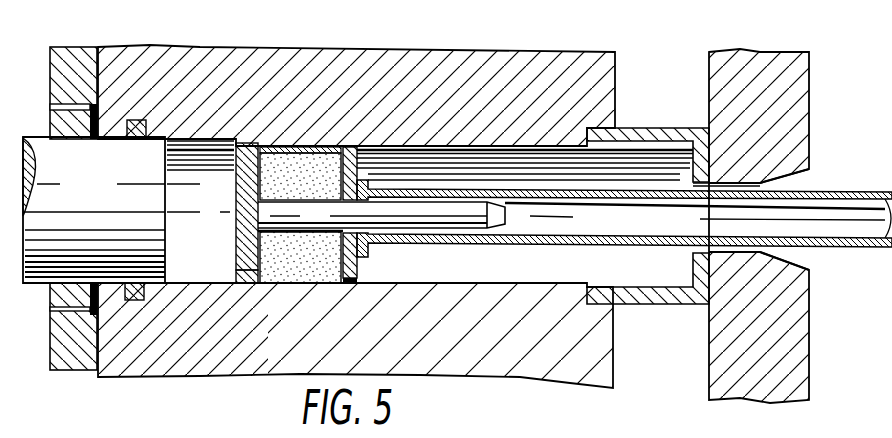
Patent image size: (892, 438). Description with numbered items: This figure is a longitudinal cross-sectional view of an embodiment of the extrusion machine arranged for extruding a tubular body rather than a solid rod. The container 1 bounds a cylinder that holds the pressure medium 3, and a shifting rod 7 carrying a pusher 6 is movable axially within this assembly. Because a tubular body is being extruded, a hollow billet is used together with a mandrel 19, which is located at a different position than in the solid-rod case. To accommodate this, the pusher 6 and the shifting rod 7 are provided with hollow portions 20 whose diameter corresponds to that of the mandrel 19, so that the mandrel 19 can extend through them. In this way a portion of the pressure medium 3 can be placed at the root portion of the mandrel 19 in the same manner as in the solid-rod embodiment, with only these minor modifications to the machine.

The container 1 is at (417, 68).
The pressure medium 3 is at (298, 258).
The pusher 6 is at (357, 174).
The shifting rod 7 is at (484, 244).
The mandrel 19 is at (450, 212).
The hollow portions 20 is at (537, 208).